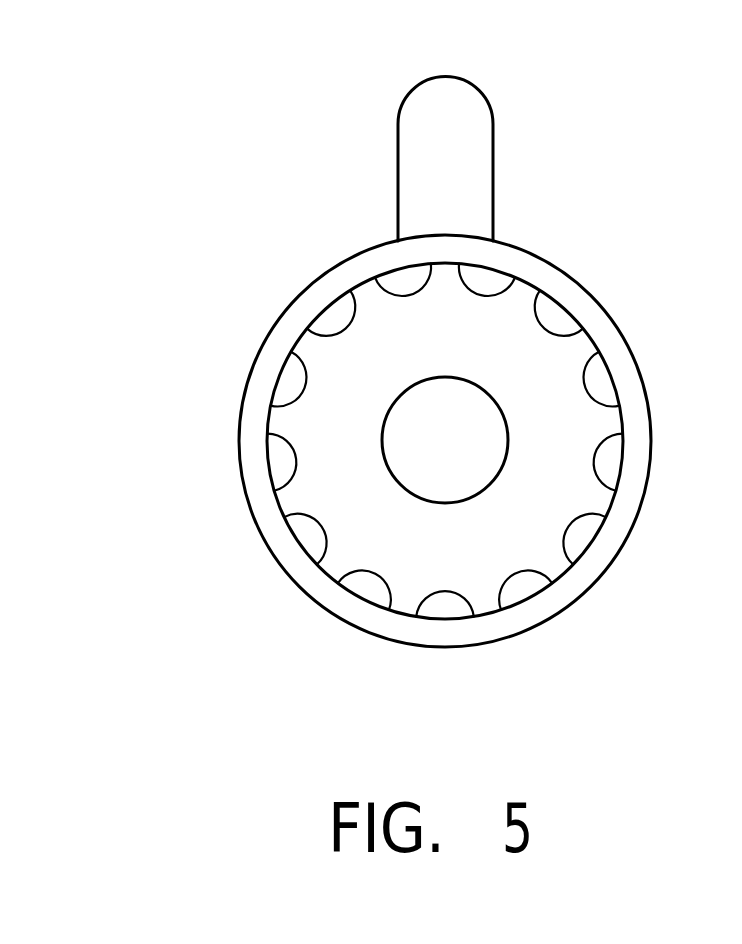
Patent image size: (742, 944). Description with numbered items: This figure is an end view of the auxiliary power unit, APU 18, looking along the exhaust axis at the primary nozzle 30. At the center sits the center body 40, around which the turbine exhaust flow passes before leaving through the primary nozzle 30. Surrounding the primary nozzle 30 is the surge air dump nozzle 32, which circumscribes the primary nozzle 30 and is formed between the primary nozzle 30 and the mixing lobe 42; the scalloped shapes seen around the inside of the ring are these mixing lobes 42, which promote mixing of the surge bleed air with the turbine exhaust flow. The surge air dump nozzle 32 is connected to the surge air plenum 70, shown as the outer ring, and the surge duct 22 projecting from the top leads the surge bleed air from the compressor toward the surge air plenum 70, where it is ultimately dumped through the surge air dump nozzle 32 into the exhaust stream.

The APU 18 is at (439, 387).
The surge duct 22 is at (470, 84).
The primary nozzle 30 is at (523, 284).
The surge air dump nozzle 32 is at (600, 385).
The center body 40 is at (440, 503).
The mixing lobe 42 is at (272, 469).
The surge air plenum 70 is at (567, 575).